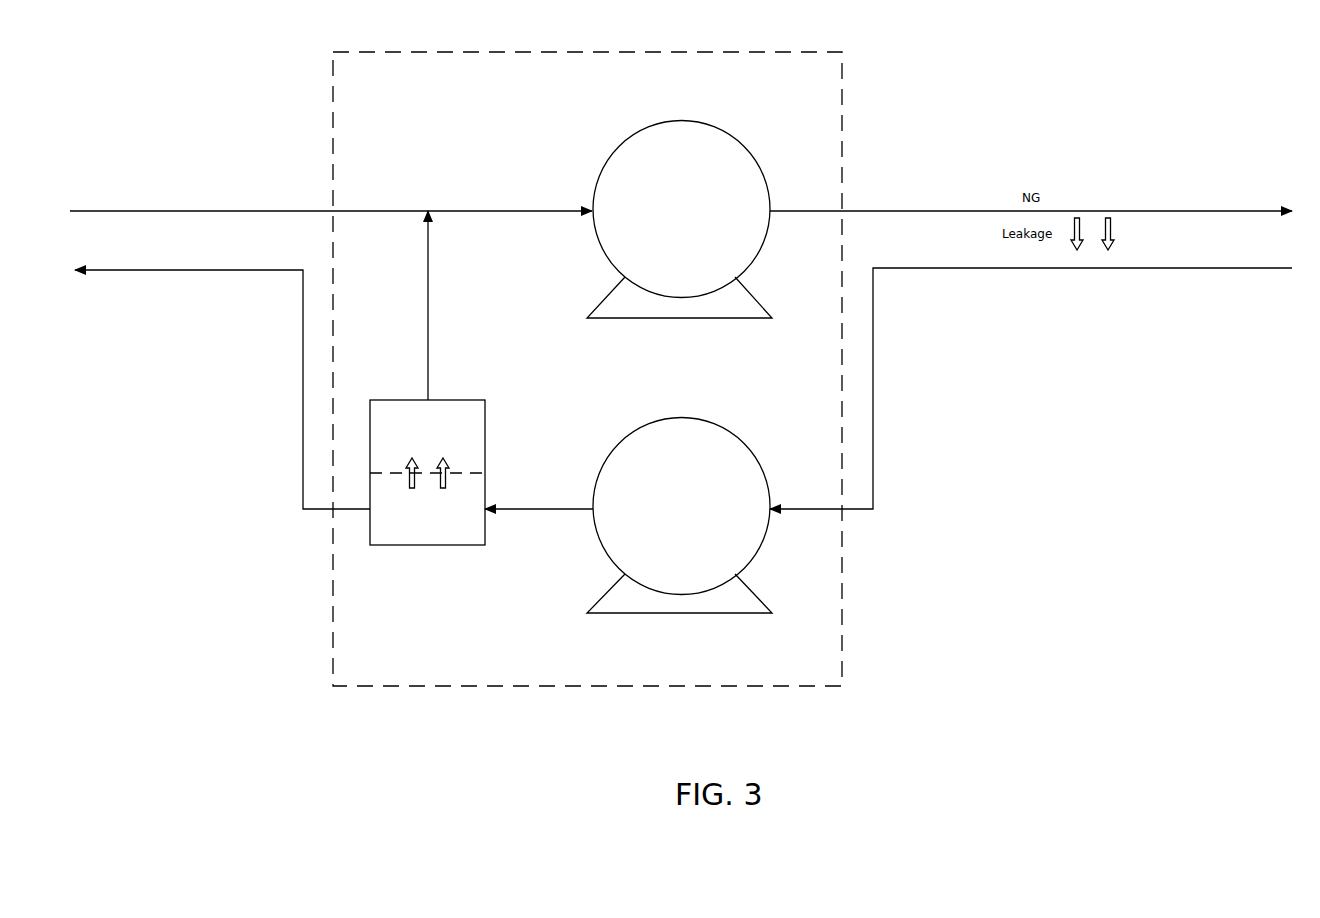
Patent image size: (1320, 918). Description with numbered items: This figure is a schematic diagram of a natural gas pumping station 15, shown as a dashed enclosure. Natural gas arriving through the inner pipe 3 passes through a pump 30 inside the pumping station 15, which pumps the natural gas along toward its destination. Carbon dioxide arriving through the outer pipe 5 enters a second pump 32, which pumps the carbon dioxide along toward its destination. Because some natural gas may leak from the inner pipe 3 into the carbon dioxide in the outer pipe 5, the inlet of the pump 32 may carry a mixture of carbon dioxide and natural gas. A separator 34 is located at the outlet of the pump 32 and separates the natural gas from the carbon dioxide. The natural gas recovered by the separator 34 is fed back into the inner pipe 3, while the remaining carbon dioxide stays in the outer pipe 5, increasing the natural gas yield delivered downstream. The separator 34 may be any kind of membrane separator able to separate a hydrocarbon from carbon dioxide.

The inner pipe 3 is at (321, 203).
The outer pipe 5 is at (1041, 386).
The natural gas pumping station 15 is at (802, 52).
The pump 30 is at (726, 126).
The pump 32 is at (727, 417).
The separator 34 is at (469, 400).